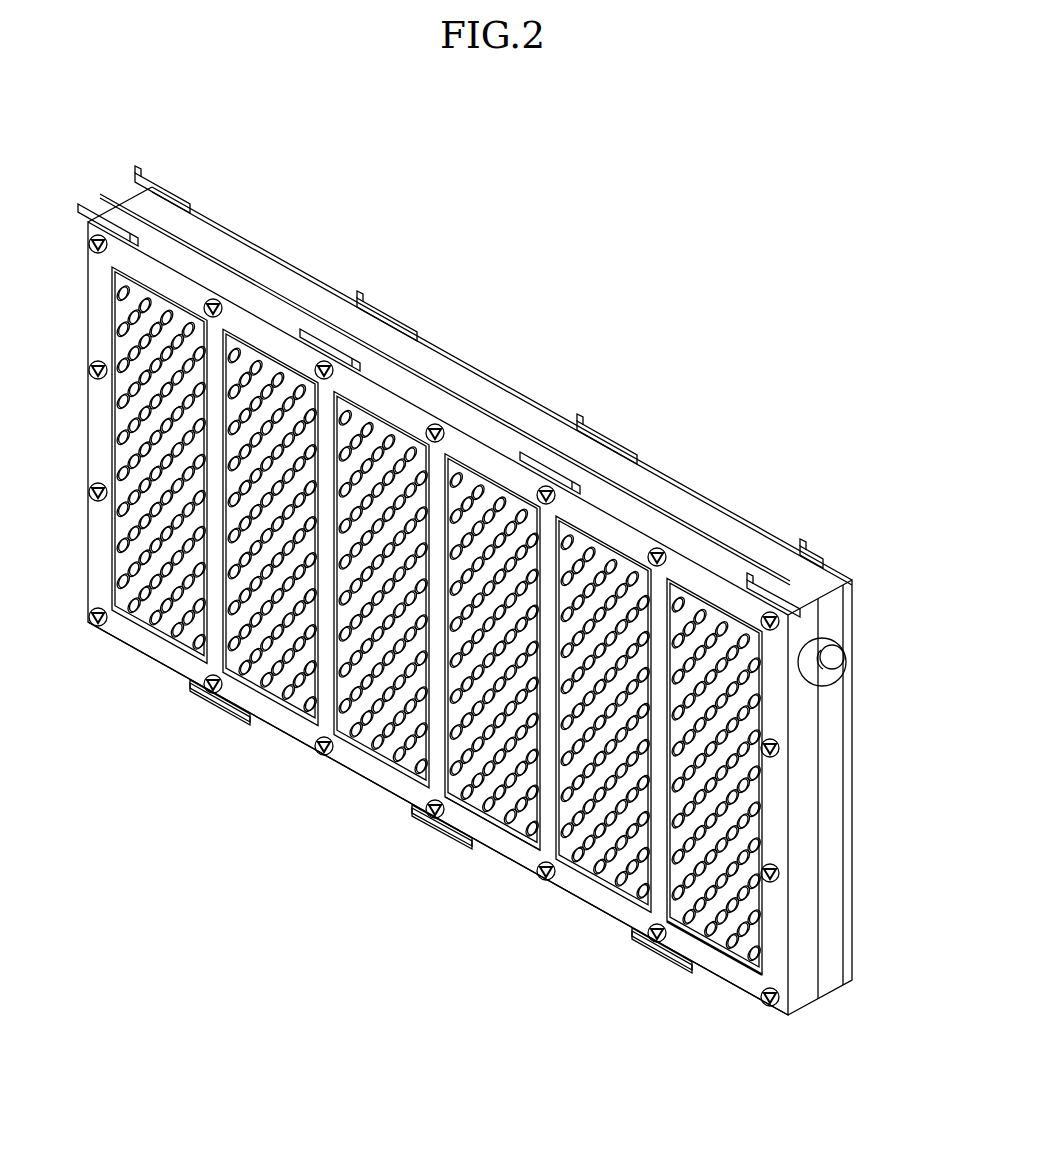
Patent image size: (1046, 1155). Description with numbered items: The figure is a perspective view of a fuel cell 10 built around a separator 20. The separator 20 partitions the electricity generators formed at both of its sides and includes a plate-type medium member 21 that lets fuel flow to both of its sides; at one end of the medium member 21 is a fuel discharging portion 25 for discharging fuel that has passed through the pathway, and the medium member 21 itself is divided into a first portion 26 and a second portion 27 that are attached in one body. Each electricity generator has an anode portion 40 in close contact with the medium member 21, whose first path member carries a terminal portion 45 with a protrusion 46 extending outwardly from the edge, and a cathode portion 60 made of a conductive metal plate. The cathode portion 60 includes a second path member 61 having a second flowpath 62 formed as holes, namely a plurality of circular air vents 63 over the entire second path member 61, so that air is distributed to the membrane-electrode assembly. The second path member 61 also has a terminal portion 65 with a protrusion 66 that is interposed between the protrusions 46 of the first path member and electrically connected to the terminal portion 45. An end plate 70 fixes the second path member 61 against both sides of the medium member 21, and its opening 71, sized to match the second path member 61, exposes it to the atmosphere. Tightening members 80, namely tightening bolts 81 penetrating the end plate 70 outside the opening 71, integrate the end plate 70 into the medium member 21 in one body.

The fuel cell 10 is at (594, 240).
The separator 20 is at (836, 824).
The medium member 21 is at (820, 994).
The fuel discharging portion 25 is at (845, 648).
The first portion 26 is at (800, 1000).
The second portion 27 is at (848, 976).
The anode portion 40 is at (517, 402).
The terminal portion 45 is at (727, 482).
The protrusion 46 is at (571, 460).
The cathode portion 60 is at (385, 546).
The second path member 61 is at (747, 970).
The second flowpath 62 is at (689, 981).
The air vent 63 is at (730, 932).
The terminal portion 65 is at (270, 234).
The protrusion 66 is at (110, 217).
The end plate 70 is at (556, 898).
The opening 71 is at (540, 879).
The tightening member 80 is at (317, 754).
The tightening bolt 81 is at (98, 628).